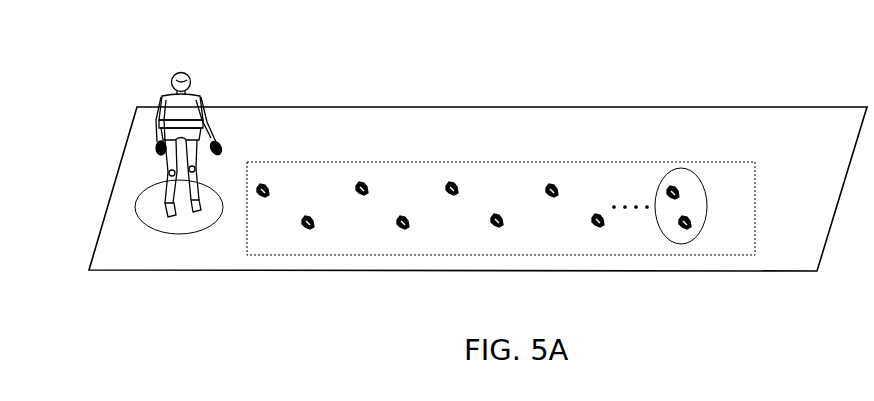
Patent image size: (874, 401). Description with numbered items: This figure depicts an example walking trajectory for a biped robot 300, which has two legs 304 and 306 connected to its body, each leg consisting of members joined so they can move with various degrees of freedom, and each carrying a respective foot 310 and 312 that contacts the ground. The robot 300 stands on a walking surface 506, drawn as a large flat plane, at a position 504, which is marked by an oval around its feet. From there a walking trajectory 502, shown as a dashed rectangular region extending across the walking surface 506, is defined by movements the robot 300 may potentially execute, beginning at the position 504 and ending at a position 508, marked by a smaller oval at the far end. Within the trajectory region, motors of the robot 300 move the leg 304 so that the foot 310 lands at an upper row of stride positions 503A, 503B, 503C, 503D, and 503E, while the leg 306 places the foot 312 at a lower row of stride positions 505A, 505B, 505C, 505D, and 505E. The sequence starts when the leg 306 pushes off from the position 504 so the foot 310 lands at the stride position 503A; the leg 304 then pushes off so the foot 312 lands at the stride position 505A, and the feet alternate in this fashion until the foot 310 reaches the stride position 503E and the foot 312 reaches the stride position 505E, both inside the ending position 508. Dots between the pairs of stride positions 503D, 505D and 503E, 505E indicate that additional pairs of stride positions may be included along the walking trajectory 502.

The robot 300 is at (181, 155).
The leg 304 is at (203, 163).
The leg 306 is at (160, 165).
The foot 310 is at (203, 210).
The foot 312 is at (168, 216).
The walking trajectory 502 is at (601, 162).
The stride position 503A is at (270, 186).
The stride position 503B is at (369, 184).
The stride position 503C is at (458, 184).
The stride position 503D is at (558, 186).
The stride position 503E is at (680, 188).
The position 504 is at (175, 236).
The stride position 505A is at (315, 219).
The stride position 505B is at (410, 219).
The stride position 505C is at (504, 218).
The stride position 505D is at (602, 226).
The stride position 505E is at (689, 228).
The walking surface 506 is at (833, 130).
The position 508 is at (656, 185).